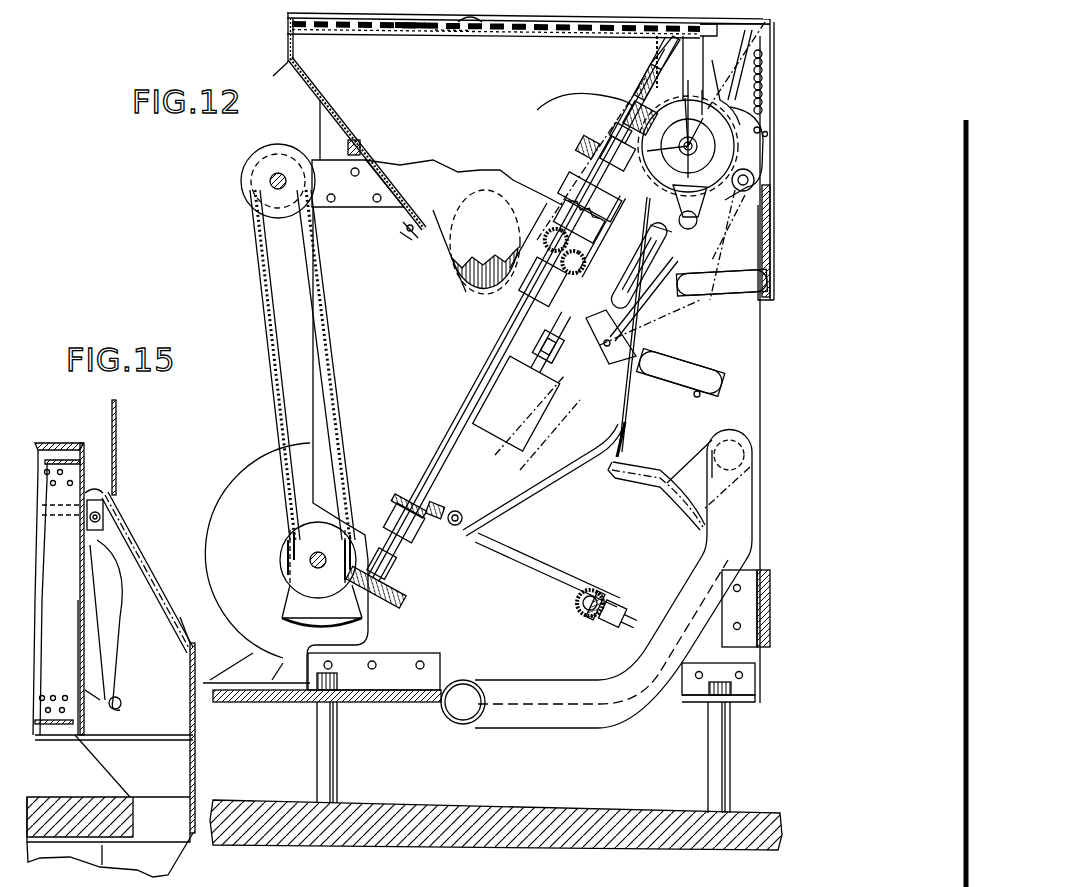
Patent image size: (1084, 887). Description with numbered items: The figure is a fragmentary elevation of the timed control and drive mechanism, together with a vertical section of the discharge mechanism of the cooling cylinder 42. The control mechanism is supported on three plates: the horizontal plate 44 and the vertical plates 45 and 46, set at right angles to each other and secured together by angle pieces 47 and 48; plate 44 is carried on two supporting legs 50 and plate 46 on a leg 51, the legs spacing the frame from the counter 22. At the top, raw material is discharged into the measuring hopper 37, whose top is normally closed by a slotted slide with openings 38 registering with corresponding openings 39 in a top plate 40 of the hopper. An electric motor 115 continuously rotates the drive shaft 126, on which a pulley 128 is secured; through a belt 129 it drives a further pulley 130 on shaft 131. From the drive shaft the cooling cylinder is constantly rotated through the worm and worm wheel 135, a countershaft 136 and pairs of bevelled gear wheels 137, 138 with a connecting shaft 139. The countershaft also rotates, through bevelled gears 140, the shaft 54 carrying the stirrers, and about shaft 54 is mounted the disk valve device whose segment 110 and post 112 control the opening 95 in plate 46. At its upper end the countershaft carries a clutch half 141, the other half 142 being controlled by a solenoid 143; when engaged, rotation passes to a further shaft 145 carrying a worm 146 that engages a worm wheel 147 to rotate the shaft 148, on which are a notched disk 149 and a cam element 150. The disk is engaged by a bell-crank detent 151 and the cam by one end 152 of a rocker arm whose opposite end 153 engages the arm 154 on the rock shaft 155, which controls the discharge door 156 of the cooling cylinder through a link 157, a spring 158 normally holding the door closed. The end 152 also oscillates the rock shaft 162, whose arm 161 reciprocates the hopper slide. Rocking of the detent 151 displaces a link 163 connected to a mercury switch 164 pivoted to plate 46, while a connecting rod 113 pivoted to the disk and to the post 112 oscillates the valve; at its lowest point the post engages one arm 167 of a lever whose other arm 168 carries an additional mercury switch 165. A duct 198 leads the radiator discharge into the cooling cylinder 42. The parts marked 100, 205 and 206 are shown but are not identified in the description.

In FIG. 12, the counter 22 is at (570, 812).
In FIG. 12, the measuring hopper 37 is at (422, 238).
In FIG. 12, the slide openings 38 is at (436, 33).
In FIG. 12, the top plate openings 39 is at (410, 32).
In FIG. 12, the top plate 40 is at (474, 32).
In FIG. 12, the cooling cylinder 42 is at (665, 495).
In FIG. 15, the cooling cylinder 42 is at (55, 458).
In FIG. 12, the plate 44 is at (256, 700).
In FIG. 12, the plate 45 is at (766, 615).
In FIG. 12, the plate 46 is at (761, 414).
In FIG. 12, the angle pieces 47 is at (385, 690).
In FIG. 12, the angle pieces 48 is at (745, 598).
In FIG. 12, the supporting legs 50 is at (330, 760).
In FIG. 12, the leg 51 is at (724, 758).
In FIG. 12, the shaft 54 is at (582, 252).
In FIG. 12, the opening 95 is at (458, 290).
In FIG. 15, the hopper 100 is at (42, 440).
In FIG. 12, the segment 110 is at (483, 875).
In FIG. 12, the post 112 is at (630, 270).
In FIG. 12, the connecting rod 113 is at (656, 303).
In FIG. 12, the electric motor 115 is at (258, 468).
In FIG. 12, the drive shaft 126 is at (310, 560).
In FIG. 12, the pulley 128 is at (290, 577).
In FIG. 12, the belt 129 is at (262, 300).
In FIG. 12, the pulley 130 is at (246, 200).
In FIG. 12, the shaft 131 is at (270, 181).
In FIG. 12, the worm and worm wheel 135 is at (392, 592).
In FIG. 12, the countershaft 136 is at (462, 415).
In FIG. 12, the bevelled gear wheels 137 is at (436, 525).
In FIG. 12, the bevelled gear wheels 138 is at (582, 618).
In FIG. 12, the connecting shaft 139 is at (524, 570).
In FIG. 12, the bevelled gears 140 is at (528, 285).
In FIG. 12, the clutch half 141 is at (563, 186).
In FIG. 12, the clutch half 142 is at (575, 163).
In FIG. 12, the solenoid 143 is at (490, 420).
In FIG. 12, the shaft 145 is at (642, 85).
In FIG. 12, the worm 146 is at (626, 100).
In FIG. 12, the worm wheel 147 is at (612, 118).
In FIG. 12, the shaft 148 is at (606, 130).
In FIG. 12, the notched disk 149 is at (712, 95).
In FIG. 12, the cam element 150 is at (688, 138).
In FIG. 12, the bell-crank detent 151 is at (767, 135).
In FIG. 12, the rocker arm end 152 is at (733, 150).
In FIG. 12, the rocker arm opposite end 153 is at (624, 446).
In FIG. 12, the arm 154 is at (546, 480).
In FIG. 12, the rock shaft 155 is at (458, 510).
In FIG. 15, the rock shaft 155 is at (102, 515).
In FIG. 15, the discharge door 156 is at (118, 698).
In FIG. 15, the link 157 is at (120, 572).
In FIG. 15, the spring 158 is at (112, 555).
In FIG. 12, the arm 161 is at (708, 62).
In FIG. 12, the rock shaft 162 is at (680, 232).
In FIG. 12, the link 163 is at (776, 218).
In FIG. 12, the mercury switch 164 is at (705, 292).
In FIG. 12, the mercury switch 165 is at (700, 375).
In FIG. 12, the lever arm 167 is at (586, 318).
In FIG. 12, the lever arm 168 is at (610, 362).
In FIG. 12, the duct 198 is at (548, 728).
In FIG. 12, the hopper wall 205 is at (340, 122).
In FIG. 12, the wire 206 is at (580, 159).